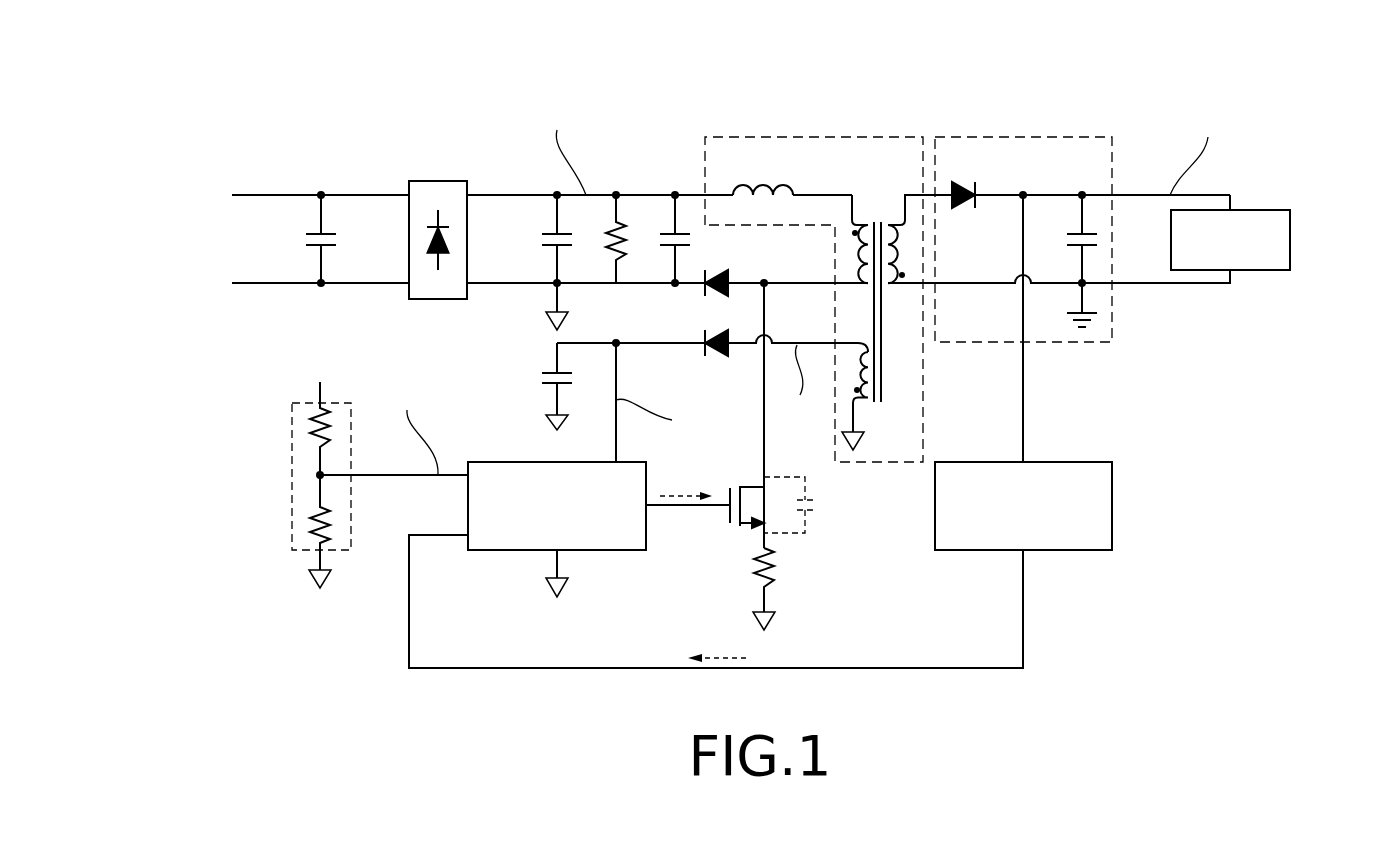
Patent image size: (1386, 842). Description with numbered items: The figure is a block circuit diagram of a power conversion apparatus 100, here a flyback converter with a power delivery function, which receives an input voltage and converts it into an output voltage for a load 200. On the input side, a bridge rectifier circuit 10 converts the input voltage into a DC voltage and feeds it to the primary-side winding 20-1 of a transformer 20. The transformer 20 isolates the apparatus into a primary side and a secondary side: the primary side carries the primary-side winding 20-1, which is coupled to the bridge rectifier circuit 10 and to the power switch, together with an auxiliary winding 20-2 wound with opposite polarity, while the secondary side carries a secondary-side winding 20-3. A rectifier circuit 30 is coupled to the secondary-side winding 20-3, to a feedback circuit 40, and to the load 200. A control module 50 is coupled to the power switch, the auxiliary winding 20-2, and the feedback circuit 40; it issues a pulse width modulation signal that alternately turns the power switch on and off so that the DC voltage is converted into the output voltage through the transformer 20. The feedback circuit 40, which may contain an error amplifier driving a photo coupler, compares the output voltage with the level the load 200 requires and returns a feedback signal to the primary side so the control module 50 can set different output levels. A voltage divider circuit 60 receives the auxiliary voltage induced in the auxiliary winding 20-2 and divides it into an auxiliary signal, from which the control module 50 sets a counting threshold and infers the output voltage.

The power conversion apparatus 100 is at (740, 46).
The bridge rectifier circuit 10 is at (438, 186).
The transformer 20 is at (823, 282).
The primary-side winding 20-1 is at (858, 222).
The auxiliary winding 20-2 is at (862, 402).
The secondary-side winding 20-3 is at (888, 222).
The rectifier circuit 30 is at (1025, 140).
The feedback circuit 40 is at (1035, 467).
The control module 50 is at (587, 543).
The voltage divider circuit 60 is at (292, 475).
The load 200 is at (1243, 217).